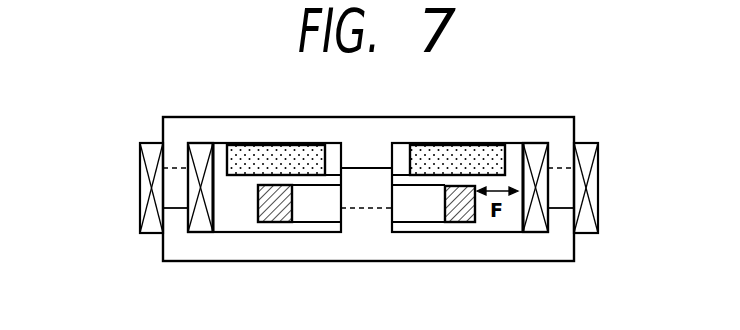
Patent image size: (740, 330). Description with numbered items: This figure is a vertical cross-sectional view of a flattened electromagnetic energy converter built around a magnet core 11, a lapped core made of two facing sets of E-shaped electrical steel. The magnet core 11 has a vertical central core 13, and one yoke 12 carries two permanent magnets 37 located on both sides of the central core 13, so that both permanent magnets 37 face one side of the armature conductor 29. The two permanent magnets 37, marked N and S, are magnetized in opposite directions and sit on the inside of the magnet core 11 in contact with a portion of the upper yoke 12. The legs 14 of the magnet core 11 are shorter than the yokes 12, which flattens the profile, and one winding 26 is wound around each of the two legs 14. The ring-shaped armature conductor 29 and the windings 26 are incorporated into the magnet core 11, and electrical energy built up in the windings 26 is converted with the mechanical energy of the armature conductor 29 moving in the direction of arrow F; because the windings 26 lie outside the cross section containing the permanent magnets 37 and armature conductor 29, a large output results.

The magnet core 11 is at (580, 116).
The yoke 12 is at (257, 130).
The central core 13 is at (367, 150).
The leg 14 is at (173, 150).
The winding 26 is at (140, 167).
The armature conductor 29 is at (275, 222).
The permanent magnet 37 is at (305, 143).